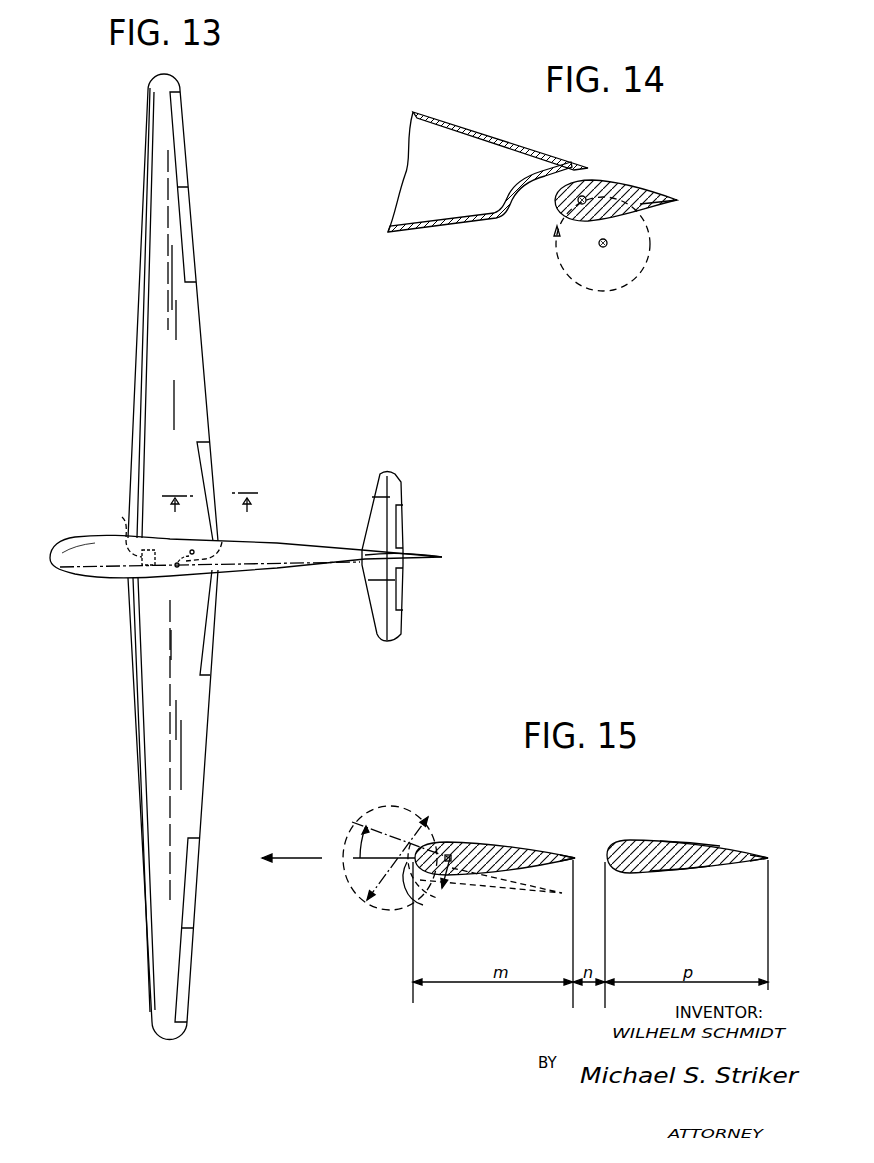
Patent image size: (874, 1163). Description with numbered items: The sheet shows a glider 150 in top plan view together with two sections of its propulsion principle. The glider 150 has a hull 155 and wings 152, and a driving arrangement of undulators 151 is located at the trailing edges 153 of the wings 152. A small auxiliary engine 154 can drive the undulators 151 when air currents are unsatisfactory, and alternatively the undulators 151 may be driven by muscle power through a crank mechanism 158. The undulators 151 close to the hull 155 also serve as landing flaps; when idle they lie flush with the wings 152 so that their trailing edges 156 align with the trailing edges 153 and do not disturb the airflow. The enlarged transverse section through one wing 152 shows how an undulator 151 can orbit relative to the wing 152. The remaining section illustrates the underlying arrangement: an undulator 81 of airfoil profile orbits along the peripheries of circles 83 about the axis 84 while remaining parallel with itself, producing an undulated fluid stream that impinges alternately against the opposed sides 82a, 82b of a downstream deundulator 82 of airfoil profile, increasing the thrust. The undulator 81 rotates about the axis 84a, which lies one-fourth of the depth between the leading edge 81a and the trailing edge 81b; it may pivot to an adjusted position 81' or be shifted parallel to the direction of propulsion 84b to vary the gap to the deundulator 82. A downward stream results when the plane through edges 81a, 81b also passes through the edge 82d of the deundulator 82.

In FIG. 13, the glider 150 is at (84, 527).
In FIG. 13, the undulator 151 is at (210, 453).
In FIG. 14, the undulator 151 is at (638, 188).
In FIG. 13, the wing 152 is at (140, 379).
In FIG. 14, the wing 152 is at (418, 138).
In FIG. 13, the trailing edge of wing 153 is at (200, 318).
In FIG. 13, the auxiliary engine 154 is at (122, 516).
In FIG. 13, the hull 155 is at (62, 553).
In FIG. 14, the trailing edge of undulator 156 is at (677, 200).
In FIG. 13, the crank mechanism 158 is at (226, 541).
In FIG. 15, the undulator 81 is at (495, 841).
In FIG. 15, the leading edge of undulator 81a is at (423, 905).
In FIG. 15, the trailing edge of undulator 81b is at (575, 856).
In FIG. 15, the undulator in adjusted angular position 81' is at (491, 894).
In FIG. 15, the deundulator 82 is at (745, 848).
In FIG. 15, the side of deundulator 82a is at (684, 842).
In FIG. 15, the side of deundulator 82b is at (676, 868).
In FIG. 15, the edge of deundulator 82d is at (768, 858).
In FIG. 15, the circle 83 is at (394, 806).
In FIG. 15, the axis 84 is at (400, 860).
In FIG. 15, the axis of undulator rotation 84a is at (449, 855).
In FIG. 15, the direction of propulsion 84b is at (296, 858).